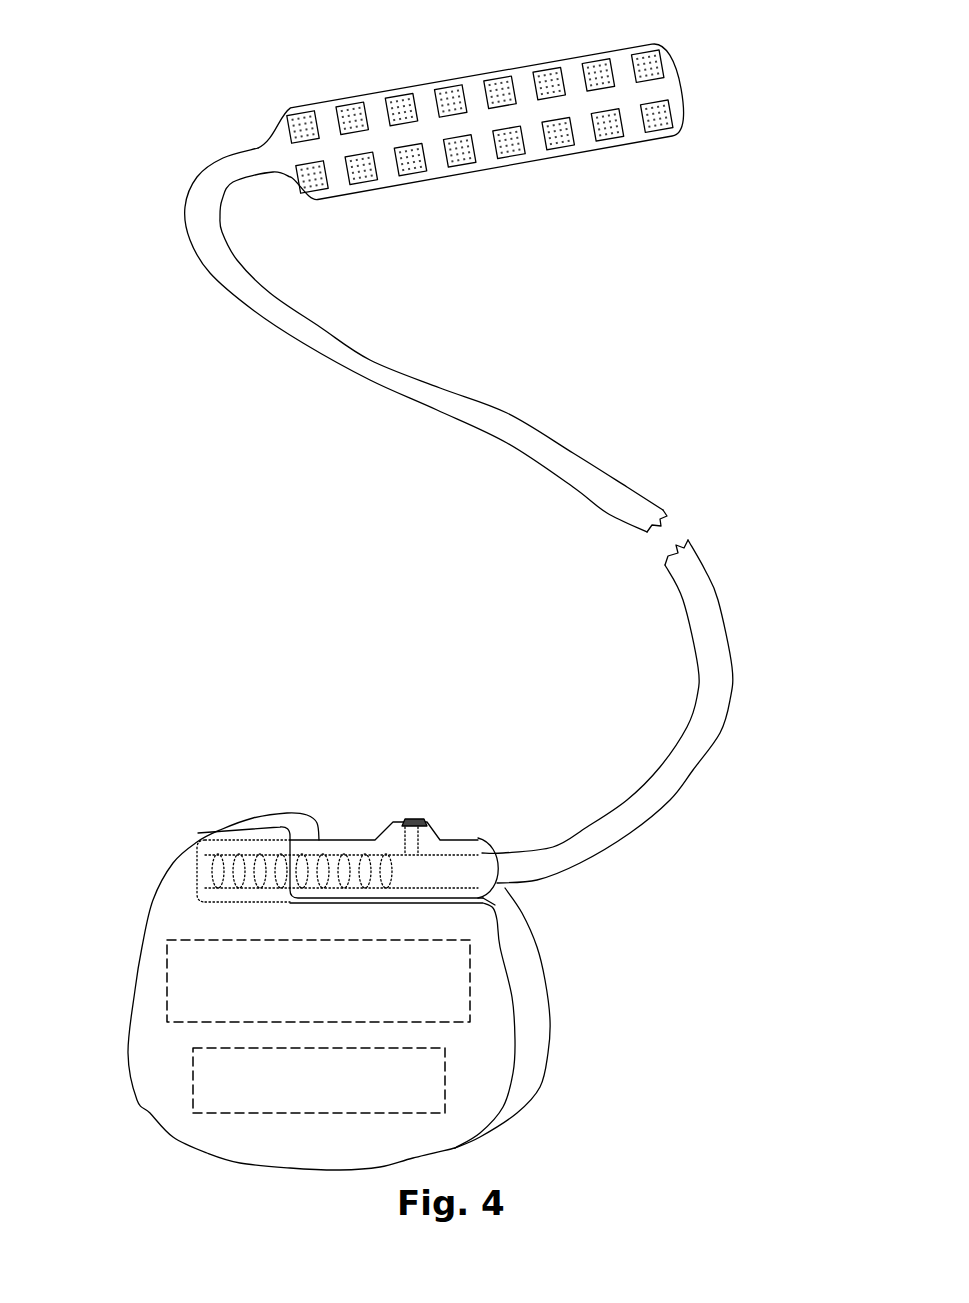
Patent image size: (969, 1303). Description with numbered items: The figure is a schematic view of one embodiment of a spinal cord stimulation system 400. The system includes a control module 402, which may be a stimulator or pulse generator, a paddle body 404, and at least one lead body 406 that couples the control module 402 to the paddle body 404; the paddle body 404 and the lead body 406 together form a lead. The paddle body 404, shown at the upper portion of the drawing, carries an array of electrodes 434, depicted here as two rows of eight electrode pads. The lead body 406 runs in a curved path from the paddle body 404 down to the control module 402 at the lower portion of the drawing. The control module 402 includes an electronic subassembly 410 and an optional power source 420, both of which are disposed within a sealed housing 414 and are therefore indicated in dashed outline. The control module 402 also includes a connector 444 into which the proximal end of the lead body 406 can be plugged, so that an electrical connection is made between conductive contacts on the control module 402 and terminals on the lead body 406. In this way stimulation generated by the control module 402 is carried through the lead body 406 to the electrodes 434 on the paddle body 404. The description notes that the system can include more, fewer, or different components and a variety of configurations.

The spinal cord stimulation system 400 is at (605, 397).
The control module 402 is at (304, 949).
The paddle body 404 is at (507, 138).
The lead body 406 is at (480, 402).
The electronic subassembly 410 is at (180, 978).
The sealed housing 414 is at (182, 917).
The power source 420 is at (200, 1078).
The electrodes 434 is at (483, 141).
The connector 444 is at (353, 840).